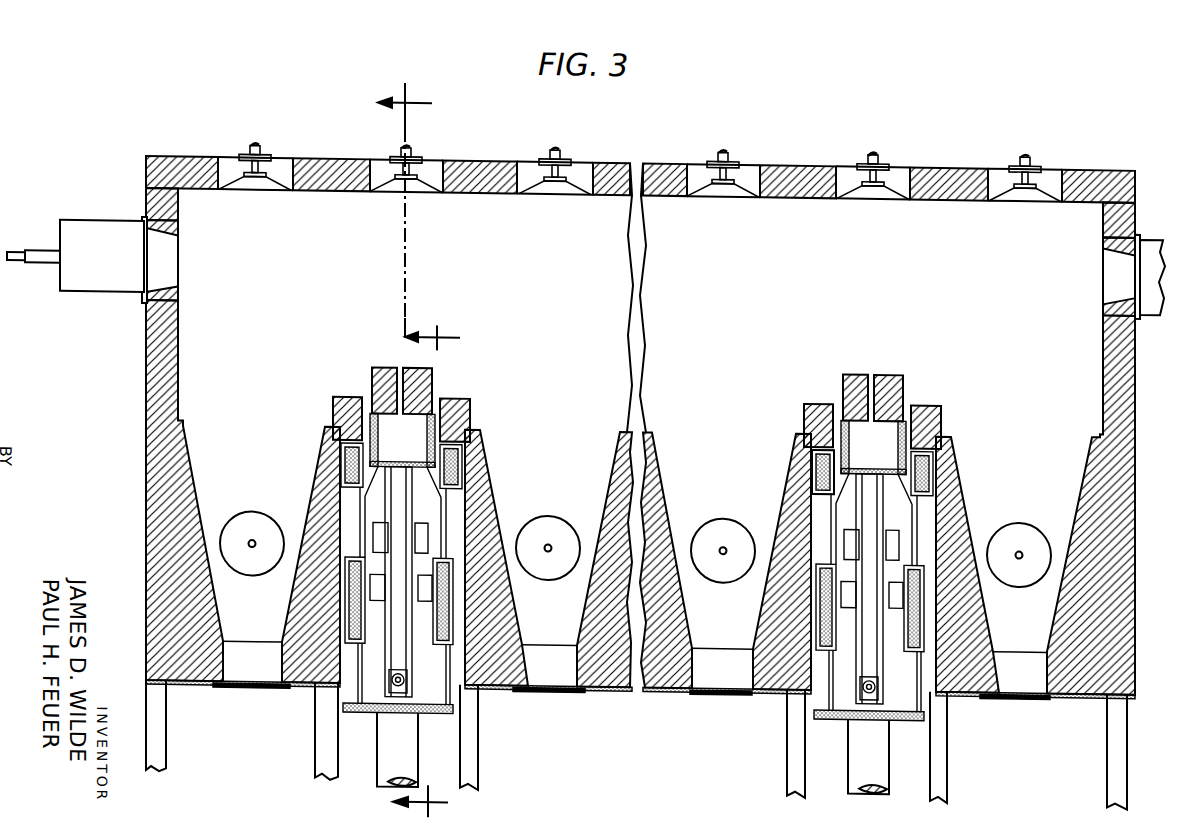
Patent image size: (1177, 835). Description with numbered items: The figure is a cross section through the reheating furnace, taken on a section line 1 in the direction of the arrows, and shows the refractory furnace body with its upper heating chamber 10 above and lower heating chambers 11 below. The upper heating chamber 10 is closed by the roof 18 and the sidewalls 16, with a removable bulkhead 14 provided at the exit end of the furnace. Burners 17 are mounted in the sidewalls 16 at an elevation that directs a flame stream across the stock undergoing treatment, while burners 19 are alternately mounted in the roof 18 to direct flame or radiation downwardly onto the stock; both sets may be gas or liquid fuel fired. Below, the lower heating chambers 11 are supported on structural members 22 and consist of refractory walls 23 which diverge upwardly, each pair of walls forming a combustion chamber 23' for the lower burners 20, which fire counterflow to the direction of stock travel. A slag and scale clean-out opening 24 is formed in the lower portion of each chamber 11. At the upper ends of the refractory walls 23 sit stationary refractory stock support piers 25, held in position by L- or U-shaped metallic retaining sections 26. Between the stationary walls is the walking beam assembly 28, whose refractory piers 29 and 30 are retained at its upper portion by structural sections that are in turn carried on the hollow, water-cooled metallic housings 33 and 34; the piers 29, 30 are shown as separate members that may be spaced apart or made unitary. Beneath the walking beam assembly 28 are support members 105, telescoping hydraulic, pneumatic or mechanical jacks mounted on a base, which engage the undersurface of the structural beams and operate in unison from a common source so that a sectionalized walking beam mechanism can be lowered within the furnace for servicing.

The section line 1- 1 is at (419, 449).
The upper heating chamber 10 is at (302, 252).
The lower heating chamber 11 is at (259, 447).
The removable bulkhead 14 is at (950, 160).
The sidewalls 16 is at (146, 375).
The burners 17 is at (87, 221).
The roof 18 is at (810, 160).
The burners 19 is at (879, 145).
The burners 20 is at (258, 510).
The structural members 22 is at (300, 686).
The refractory walls 23 is at (633, 559).
The combustion chambers 23' is at (604, 495).
The slag and scale clean-out opening 24 is at (258, 653).
The stationary refractory stock support piers 25 is at (815, 394).
The metallic retaining sections 26 is at (831, 437).
The walking beam assembly 28 is at (840, 766).
The refractory pier 29 is at (380, 364).
The refractory pier 30 is at (432, 376).
The water-cooled housing 33 is at (351, 394).
The water-cooled housing 34 is at (460, 394).
The support members 105 is at (418, 731).